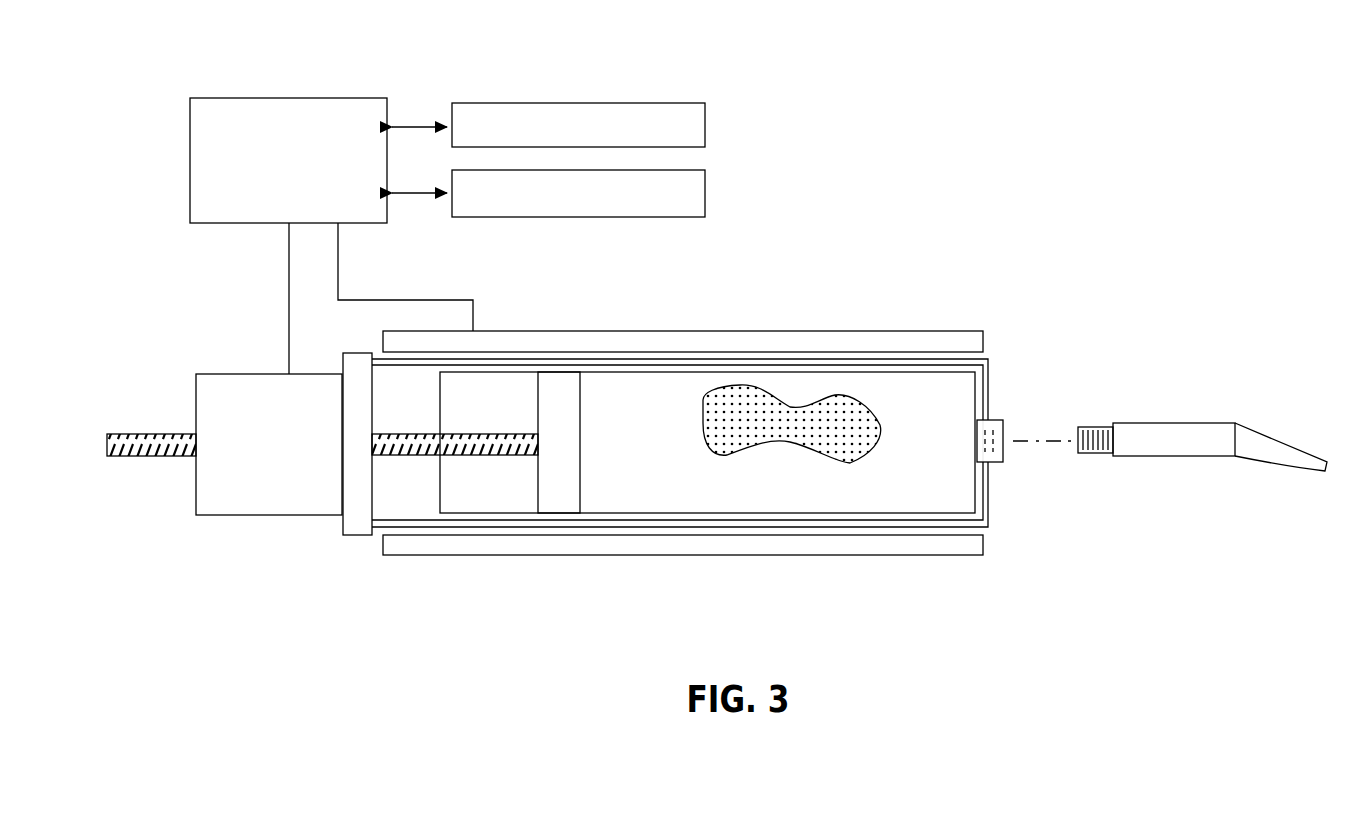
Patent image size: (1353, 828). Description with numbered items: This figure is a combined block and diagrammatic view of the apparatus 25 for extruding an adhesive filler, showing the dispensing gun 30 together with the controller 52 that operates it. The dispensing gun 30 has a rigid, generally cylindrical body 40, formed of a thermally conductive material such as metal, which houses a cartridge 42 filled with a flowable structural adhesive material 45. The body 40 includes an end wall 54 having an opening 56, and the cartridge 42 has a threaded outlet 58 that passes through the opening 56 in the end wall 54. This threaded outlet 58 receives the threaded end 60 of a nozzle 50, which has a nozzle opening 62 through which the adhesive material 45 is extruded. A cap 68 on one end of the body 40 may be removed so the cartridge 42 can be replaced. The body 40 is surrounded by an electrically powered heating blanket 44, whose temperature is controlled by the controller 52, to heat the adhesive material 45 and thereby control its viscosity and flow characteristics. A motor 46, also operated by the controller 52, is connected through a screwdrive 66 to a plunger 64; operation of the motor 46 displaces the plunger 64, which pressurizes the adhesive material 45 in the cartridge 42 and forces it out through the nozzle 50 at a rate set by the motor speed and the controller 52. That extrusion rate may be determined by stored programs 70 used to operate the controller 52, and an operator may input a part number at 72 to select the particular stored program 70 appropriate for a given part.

The apparatus 25 is at (838, 96).
The dispensing gun 30 is at (876, 296).
The body 40 is at (875, 517).
The cartridge 42 is at (698, 487).
The heating blanket 44 is at (545, 543).
The adhesive material 45 is at (742, 407).
The motor 46 is at (273, 493).
The nozzle 50 is at (1228, 394).
The controller 52 is at (287, 98).
The end wall 54 is at (988, 383).
The opening 56 is at (1000, 465).
The threaded outlet 58 is at (1005, 428).
The threaded end 60 is at (1085, 455).
The nozzle opening 62 is at (1316, 473).
The plunger 64 is at (558, 397).
The screwdrive 66 is at (143, 460).
The cap 68 is at (358, 525).
The stored programs 70 is at (705, 125).
The part number input 72 is at (705, 190).